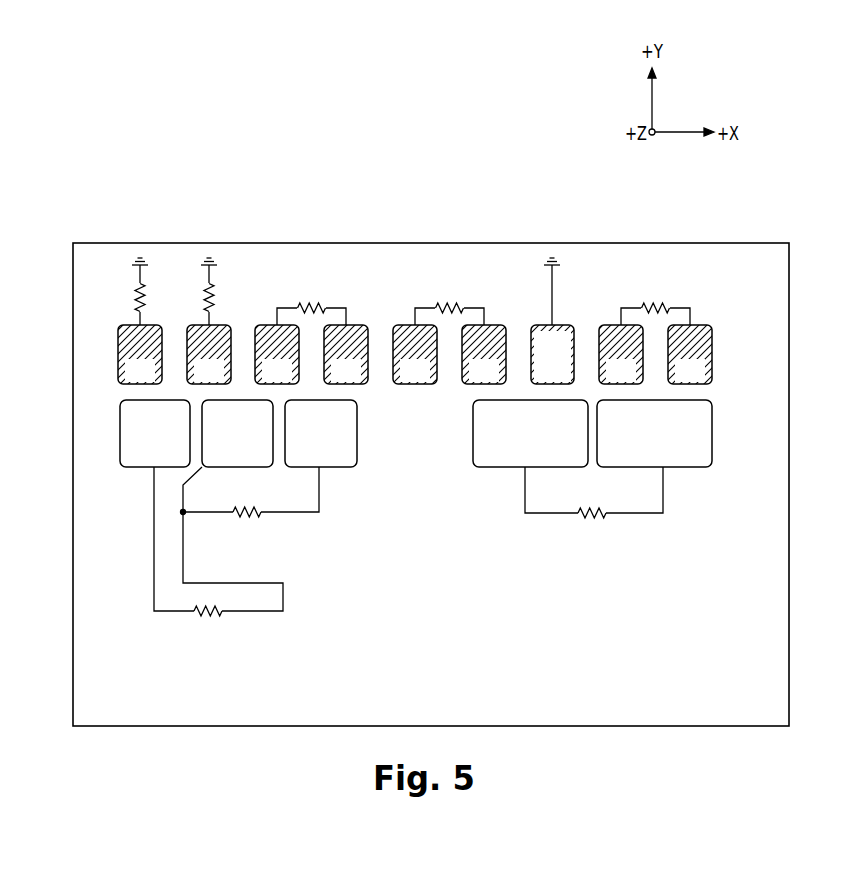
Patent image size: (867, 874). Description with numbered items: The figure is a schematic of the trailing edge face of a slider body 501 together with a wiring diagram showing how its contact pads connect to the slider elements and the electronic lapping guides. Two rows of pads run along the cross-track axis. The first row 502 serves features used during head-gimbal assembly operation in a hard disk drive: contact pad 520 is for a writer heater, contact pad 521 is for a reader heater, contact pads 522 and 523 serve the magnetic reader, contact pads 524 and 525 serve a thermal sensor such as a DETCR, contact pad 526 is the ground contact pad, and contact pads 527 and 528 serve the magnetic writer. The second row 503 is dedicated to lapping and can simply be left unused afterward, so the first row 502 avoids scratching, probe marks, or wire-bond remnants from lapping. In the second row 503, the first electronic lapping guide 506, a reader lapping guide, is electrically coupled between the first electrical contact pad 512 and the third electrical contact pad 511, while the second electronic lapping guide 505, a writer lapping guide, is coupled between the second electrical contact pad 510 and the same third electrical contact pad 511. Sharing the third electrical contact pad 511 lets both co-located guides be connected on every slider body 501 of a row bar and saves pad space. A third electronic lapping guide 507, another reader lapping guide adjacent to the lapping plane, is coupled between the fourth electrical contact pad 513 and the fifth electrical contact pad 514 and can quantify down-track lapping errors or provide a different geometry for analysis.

The slider body 501 is at (520, 230).
The first row of electrical contact pads 502 is at (722, 358).
The second row of electrical contact pads 503 is at (722, 430).
The second electronic lapping guide 505 is at (217, 573).
The first electronic lapping guide 506 is at (250, 523).
The third electronic lapping guide 507 is at (594, 523).
The second electrical contact pad 510 is at (141, 460).
The third electrical contact pad 511 is at (223, 460).
The first electrical contact pad 512 is at (307, 460).
The fourth electrical contact pad 513 is at (518, 460).
The fifth electrical contact pad 514 is at (638, 460).
The contact pad 520 is at (126, 380).
The contact pad 521 is at (195, 380).
The contact pad 522 is at (263, 380).
The contact pad 523 is at (332, 380).
The contact pad 524 is at (401, 380).
The contact pad 525 is at (470, 380).
The ground contact pad 526 is at (538, 380).
The contact pad 527 is at (607, 380).
The contact pad 528 is at (676, 380).